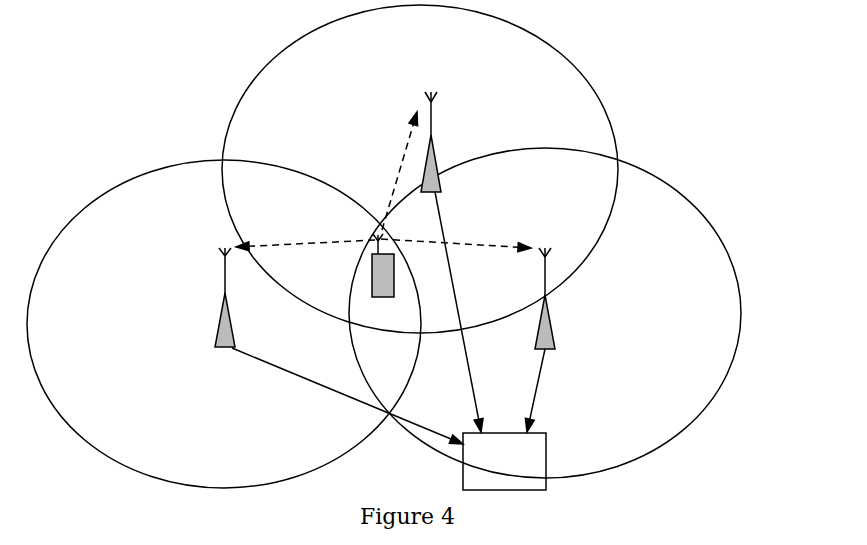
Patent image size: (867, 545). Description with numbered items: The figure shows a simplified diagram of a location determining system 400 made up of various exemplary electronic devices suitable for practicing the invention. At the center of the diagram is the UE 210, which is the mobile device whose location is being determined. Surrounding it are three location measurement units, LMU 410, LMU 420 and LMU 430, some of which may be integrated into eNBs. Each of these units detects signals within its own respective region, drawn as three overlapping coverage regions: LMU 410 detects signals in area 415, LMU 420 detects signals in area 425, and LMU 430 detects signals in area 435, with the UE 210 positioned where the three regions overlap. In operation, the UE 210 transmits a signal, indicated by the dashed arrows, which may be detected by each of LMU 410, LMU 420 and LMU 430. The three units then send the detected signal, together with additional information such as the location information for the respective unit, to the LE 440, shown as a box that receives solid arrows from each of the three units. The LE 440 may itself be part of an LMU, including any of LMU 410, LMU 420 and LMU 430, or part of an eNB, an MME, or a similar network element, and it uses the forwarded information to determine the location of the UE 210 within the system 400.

The location determining system 400 is at (384, 247).
The LMU 410 is at (201, 301).
The area 415 is at (224, 324).
The LMU 420 is at (452, 140).
The area 425 is at (420, 169).
The LMU 430 is at (570, 324).
The area 435 is at (545, 313).
The UE 210 is at (399, 316).
The LE 440 is at (389, 341).